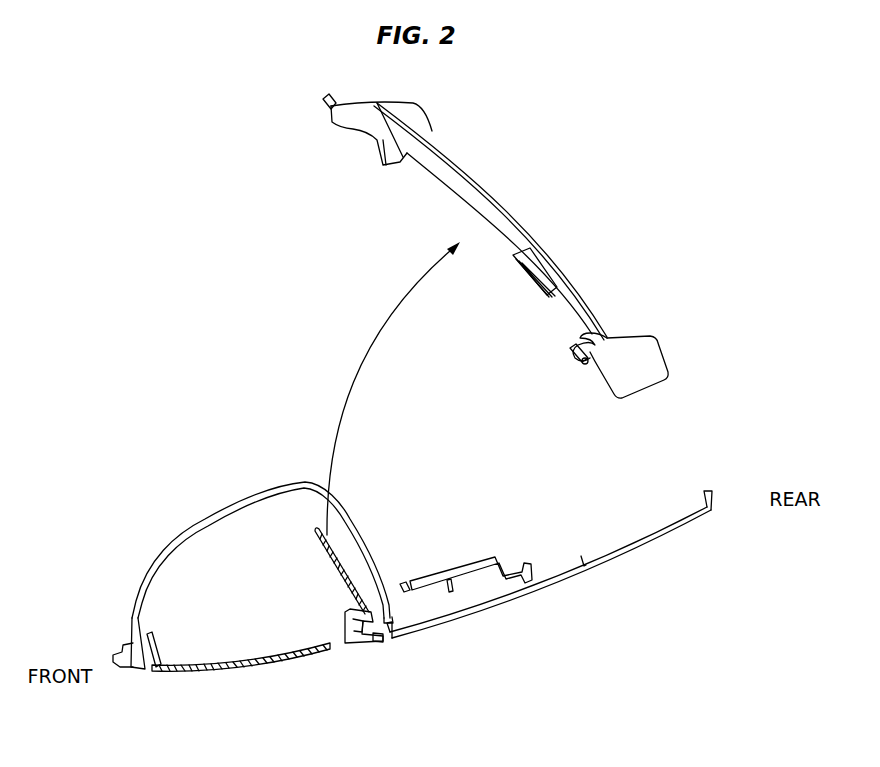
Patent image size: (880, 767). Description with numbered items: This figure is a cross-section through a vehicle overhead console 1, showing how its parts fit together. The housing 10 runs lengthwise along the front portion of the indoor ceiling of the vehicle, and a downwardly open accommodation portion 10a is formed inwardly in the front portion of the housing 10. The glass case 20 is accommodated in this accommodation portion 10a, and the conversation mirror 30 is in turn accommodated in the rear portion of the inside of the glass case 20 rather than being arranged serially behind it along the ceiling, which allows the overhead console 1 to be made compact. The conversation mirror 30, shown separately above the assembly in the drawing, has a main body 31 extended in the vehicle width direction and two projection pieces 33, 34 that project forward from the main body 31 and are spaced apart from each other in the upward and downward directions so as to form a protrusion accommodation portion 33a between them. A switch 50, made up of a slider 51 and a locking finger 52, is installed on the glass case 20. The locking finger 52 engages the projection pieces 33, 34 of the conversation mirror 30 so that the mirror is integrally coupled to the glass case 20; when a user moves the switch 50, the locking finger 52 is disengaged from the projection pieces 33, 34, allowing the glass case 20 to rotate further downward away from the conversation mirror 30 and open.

The overhead console 1 is at (221, 438).
The housing 10 is at (150, 565).
The accommodation portion 10a is at (208, 570).
The glass case 20 is at (234, 668).
The conversation mirror 30 is at (652, 180).
The main body 31 is at (512, 225).
The projection piece 33 is at (547, 292).
The protrusion accommodation portion 33a is at (366, 612).
The projection piece 34 is at (533, 267).
The switch 50 is at (352, 716).
The slider 51 is at (363, 645).
The locking finger 52 is at (348, 646).